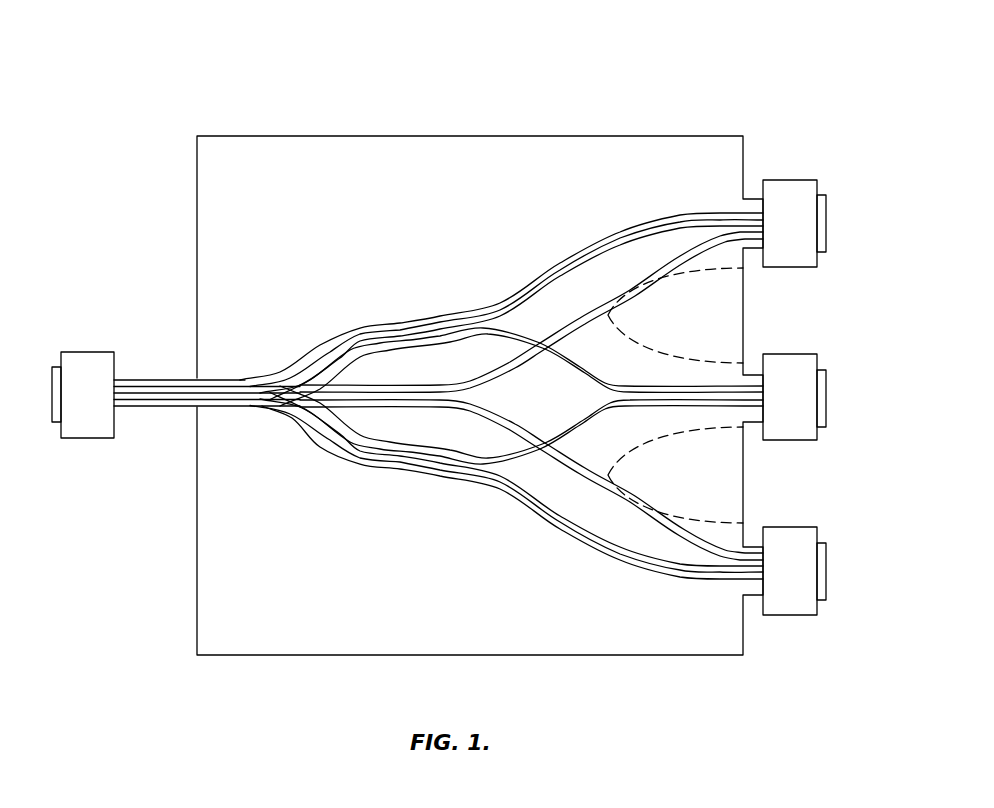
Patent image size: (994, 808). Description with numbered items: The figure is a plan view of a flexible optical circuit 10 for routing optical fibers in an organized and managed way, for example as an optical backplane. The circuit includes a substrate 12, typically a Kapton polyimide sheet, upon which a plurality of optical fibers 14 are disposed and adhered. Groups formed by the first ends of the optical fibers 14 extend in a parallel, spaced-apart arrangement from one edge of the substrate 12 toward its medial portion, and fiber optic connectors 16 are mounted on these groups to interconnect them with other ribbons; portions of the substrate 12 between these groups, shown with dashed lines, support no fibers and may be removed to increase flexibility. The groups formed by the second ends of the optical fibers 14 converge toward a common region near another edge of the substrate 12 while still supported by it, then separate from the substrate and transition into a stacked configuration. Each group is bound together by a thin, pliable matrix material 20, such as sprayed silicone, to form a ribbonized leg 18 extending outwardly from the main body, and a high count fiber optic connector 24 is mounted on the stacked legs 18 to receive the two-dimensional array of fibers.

The optical circuit 10 is at (555, 92).
The substrate 12 is at (700, 148).
The optical fibers 14 is at (507, 293).
The fiber optic connectors 16 is at (783, 186).
The legs 18 is at (256, 368).
The matrix material 20 is at (229, 407).
The fiber optic connector 24 is at (78, 428).